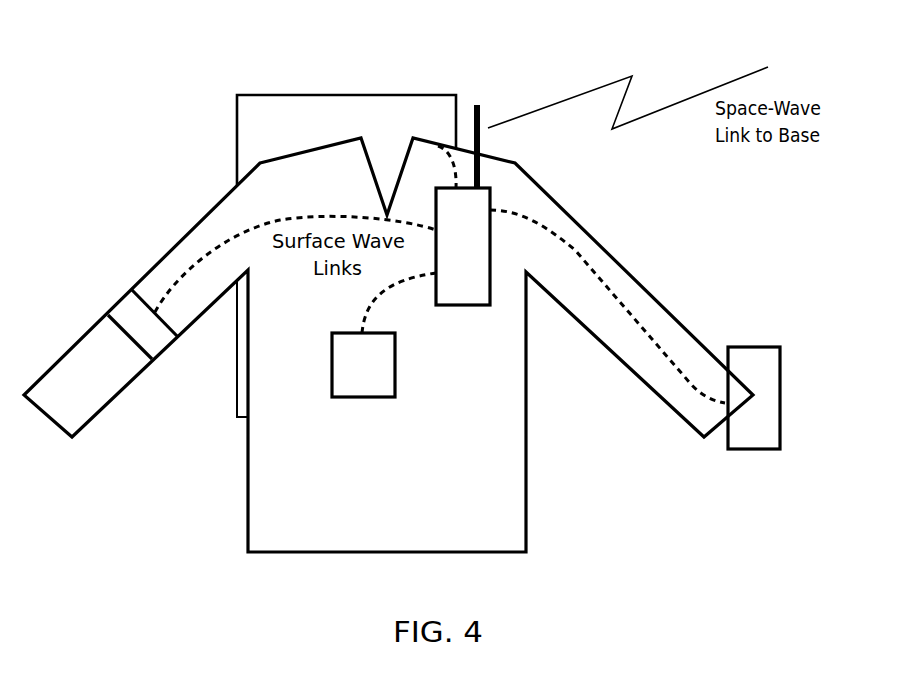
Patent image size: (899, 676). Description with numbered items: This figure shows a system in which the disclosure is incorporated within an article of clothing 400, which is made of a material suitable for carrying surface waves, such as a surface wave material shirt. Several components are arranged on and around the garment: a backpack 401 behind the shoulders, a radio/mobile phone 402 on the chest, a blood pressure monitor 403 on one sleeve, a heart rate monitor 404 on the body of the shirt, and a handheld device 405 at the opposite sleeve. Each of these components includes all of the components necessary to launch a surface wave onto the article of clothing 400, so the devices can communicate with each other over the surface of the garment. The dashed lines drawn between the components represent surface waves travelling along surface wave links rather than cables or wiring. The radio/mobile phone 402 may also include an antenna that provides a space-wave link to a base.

The article of clothing 400 is at (526, 505).
The backpack 401 is at (347, 95).
The radio/mobile phone 402 is at (490, 287).
The blood pressure monitor 403 is at (160, 357).
The heart rate monitor 404 is at (395, 369).
The handheld device 405 is at (780, 400).